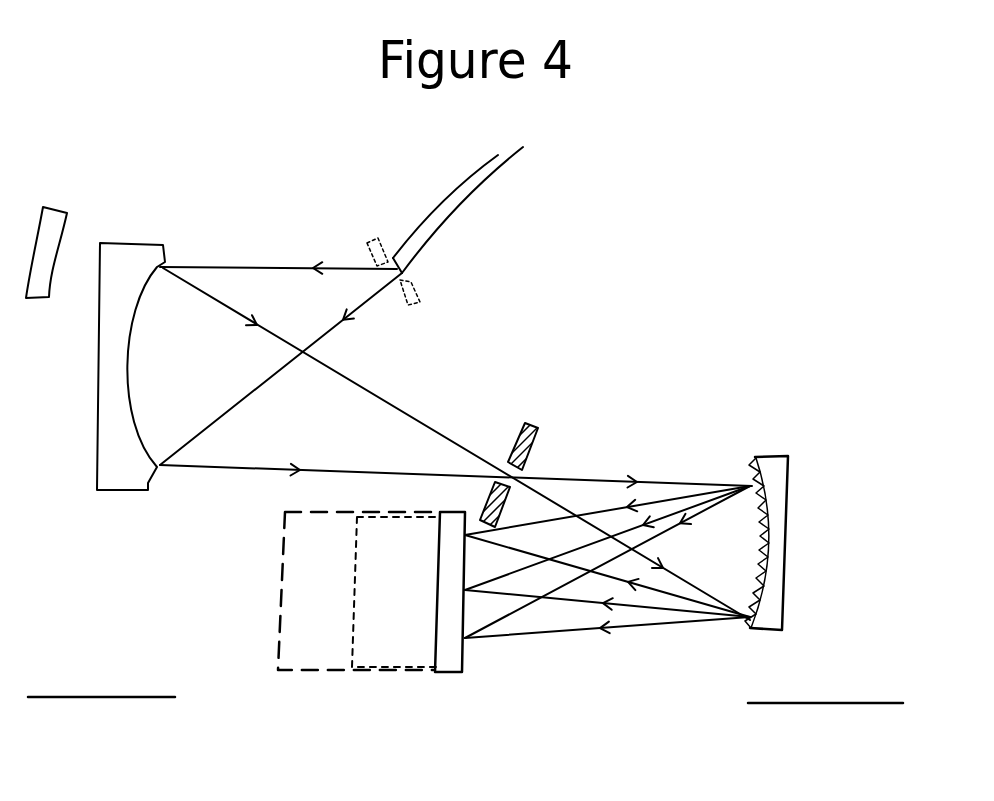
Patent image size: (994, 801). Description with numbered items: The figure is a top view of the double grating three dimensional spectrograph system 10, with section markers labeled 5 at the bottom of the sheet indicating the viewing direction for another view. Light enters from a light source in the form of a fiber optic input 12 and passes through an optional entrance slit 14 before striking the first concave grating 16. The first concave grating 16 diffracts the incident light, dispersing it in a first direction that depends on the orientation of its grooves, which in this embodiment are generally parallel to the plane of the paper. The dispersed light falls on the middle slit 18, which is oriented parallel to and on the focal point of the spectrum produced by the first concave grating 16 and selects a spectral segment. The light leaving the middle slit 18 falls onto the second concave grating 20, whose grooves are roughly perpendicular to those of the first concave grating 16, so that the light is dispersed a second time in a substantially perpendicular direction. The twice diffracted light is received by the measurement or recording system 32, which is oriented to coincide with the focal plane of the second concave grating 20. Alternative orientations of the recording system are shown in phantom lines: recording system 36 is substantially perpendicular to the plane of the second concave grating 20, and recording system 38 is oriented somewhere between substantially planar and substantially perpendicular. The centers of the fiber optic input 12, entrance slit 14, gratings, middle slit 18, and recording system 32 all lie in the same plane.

The double grating three dimensional spectrograph system 10 is at (617, 332).
The fiber optic input 12 is at (510, 152).
The entrance slit 14 is at (382, 243).
The first concave grating 16 is at (117, 245).
The middle slit 18 is at (536, 422).
The second concave grating 20 is at (788, 492).
The measurement or recording system 32 is at (464, 673).
The recording system 36 is at (283, 600).
The recording system 38 is at (387, 649).
The section line 5 is at (105, 712).